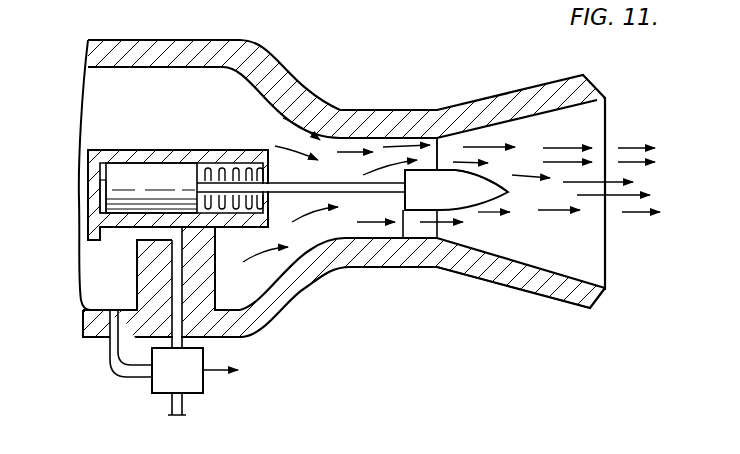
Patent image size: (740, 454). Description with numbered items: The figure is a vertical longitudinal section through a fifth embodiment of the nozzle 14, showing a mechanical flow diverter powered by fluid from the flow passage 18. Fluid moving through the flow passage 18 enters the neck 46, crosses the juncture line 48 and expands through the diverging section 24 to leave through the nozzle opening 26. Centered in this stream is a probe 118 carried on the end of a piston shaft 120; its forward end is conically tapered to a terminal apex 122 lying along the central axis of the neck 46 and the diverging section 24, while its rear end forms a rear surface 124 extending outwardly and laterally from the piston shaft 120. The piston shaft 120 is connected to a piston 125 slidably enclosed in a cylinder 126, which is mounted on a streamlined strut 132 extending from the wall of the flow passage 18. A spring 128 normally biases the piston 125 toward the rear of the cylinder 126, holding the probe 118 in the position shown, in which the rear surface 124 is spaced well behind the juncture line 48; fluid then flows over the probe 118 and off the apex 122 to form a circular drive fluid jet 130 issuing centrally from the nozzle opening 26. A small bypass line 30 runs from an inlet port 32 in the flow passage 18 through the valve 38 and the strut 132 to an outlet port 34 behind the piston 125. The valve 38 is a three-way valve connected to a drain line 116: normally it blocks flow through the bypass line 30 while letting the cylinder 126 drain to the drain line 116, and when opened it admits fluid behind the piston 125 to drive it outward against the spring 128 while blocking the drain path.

The nozzle 14 is at (425, 252).
The flow passage 18 is at (252, 92).
The diverging section 24 is at (553, 258).
The nozzle opening 26 is at (606, 100).
The bypass line 30 is at (128, 377).
The inlet port 32 is at (83, 302).
The outlet port 34 is at (104, 213).
The valve 38 is at (203, 384).
The neck 46 is at (393, 178).
The juncture line 48 is at (440, 142).
The drain line 116 is at (185, 407).
The probe 118 is at (455, 196).
The piston shaft 120 is at (357, 197).
The terminal apex 122 is at (508, 192).
The rear surface 124 is at (403, 258).
The piston 125 is at (142, 175).
The cylinder 126 is at (102, 150).
The spring 128 is at (228, 170).
The circular drive fluid jet 130 is at (592, 192).
The strut 132 is at (200, 268).